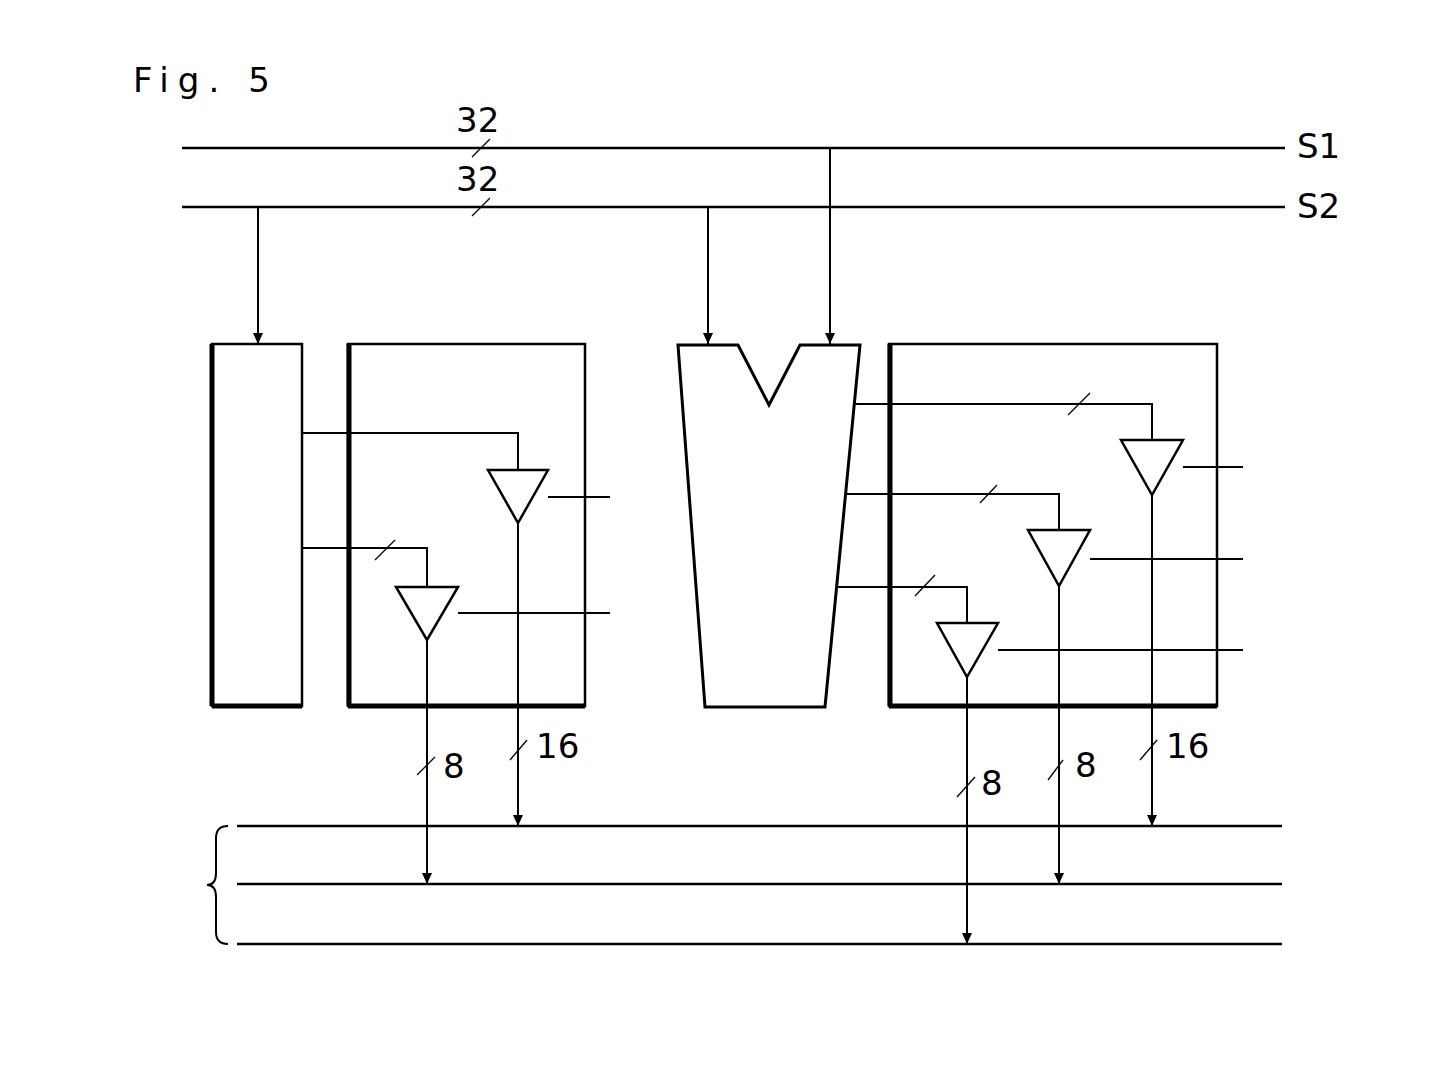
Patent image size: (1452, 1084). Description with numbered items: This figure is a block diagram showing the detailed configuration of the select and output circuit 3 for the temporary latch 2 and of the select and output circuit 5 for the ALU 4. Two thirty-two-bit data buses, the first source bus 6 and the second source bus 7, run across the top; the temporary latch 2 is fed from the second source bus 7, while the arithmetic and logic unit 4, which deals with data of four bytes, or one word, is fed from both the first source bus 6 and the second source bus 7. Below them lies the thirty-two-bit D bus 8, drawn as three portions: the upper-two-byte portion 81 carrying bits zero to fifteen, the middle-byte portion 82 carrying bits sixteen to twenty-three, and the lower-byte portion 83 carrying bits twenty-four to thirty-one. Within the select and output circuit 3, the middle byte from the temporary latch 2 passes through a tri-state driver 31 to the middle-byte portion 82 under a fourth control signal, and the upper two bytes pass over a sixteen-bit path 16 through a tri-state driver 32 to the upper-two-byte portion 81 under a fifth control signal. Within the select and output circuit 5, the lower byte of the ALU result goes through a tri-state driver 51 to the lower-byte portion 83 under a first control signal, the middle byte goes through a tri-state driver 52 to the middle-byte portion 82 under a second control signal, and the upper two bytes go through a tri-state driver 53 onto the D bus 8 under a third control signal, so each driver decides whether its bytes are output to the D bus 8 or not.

The temporary latch 2 is at (280, 343).
The select and output circuit for the temporary latch 3 is at (540, 343).
The arithmetic and logic unit (ALU) 4 is at (845, 343).
The select and output circuit for the ALU 5 is at (1170, 343).
The S1 bus 6 is at (1170, 148).
The S2 bus 7 is at (1170, 207).
The D bus 8 is at (811, 874).
The 16-bit data line 16 is at (488, 425).
The tri-state driver 31 is at (432, 640).
The tri-state driver 32 is at (524, 522).
The tri-state driver 51 is at (951, 648).
The tri-state driver 52 is at (1068, 573).
The tri-state driver 53 is at (1160, 478).
The D (0:15) 81 is at (1175, 827).
The D (16:23) 82 is at (1175, 885).
The D (24:31) 83 is at (1175, 945).